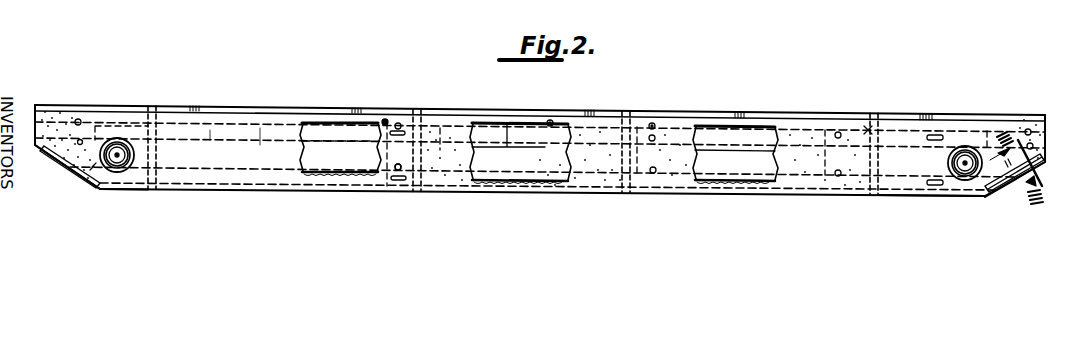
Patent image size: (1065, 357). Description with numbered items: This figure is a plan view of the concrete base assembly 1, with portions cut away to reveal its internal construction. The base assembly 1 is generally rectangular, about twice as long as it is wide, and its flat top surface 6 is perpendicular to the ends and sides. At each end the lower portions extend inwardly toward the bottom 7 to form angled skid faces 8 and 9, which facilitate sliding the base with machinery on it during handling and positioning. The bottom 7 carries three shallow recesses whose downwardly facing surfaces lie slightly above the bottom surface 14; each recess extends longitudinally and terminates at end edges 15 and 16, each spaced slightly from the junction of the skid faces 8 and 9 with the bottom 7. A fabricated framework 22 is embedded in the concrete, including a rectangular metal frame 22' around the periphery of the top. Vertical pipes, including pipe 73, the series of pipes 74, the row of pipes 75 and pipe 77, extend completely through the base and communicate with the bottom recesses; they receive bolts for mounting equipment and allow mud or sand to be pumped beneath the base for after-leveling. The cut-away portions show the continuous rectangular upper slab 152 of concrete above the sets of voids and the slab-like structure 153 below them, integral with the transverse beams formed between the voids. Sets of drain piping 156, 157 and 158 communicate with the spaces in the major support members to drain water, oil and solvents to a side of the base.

The concrete base assembly 1 is at (540, 116).
The top surface 6 is at (300, 107).
The bottom 7 is at (627, 200).
The angled skid face 8 is at (54, 170).
The angled skid face 9 is at (1010, 192).
The bottom surface 14 is at (464, 190).
The end edge 15 is at (133, 194).
The end edge 16 is at (923, 201).
The fabricated framework 22 is at (799, 79).
The rectangular metal frame 22' is at (254, 77).
The vertical pipe 73 is at (155, 110).
The vertical pipes 74 is at (429, 101).
The vertical pipes 75 is at (620, 111).
The vertical pipe 77 is at (866, 113).
The upper slab 152 is at (452, 124).
The lower slab-like structure 153 is at (600, 181).
The drain piping 156 is at (384, 119).
The drain piping 157 is at (553, 121).
The drain piping 158 is at (651, 121).